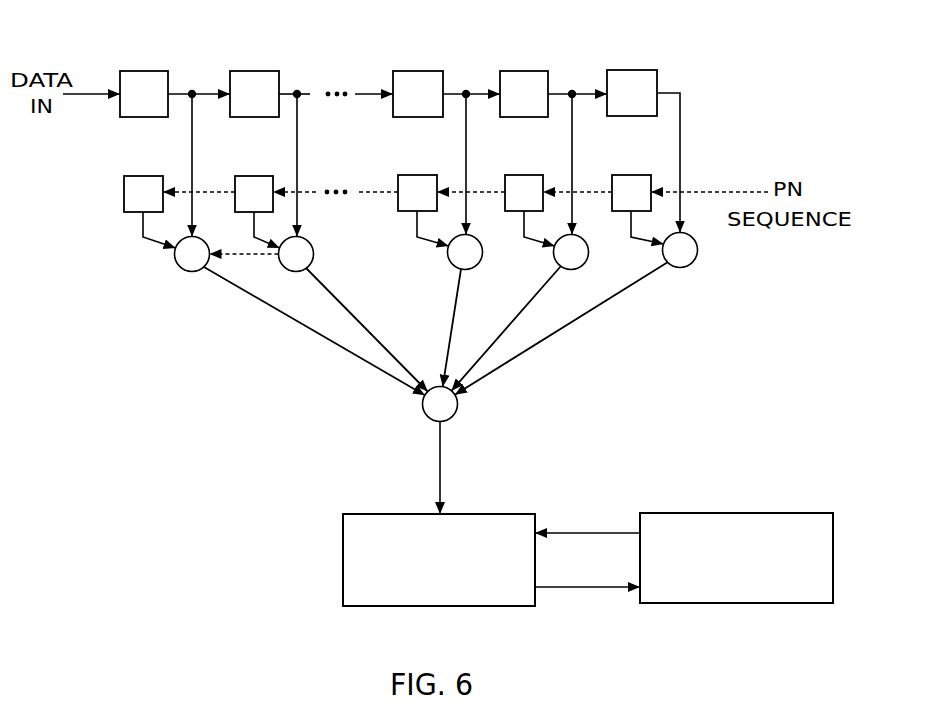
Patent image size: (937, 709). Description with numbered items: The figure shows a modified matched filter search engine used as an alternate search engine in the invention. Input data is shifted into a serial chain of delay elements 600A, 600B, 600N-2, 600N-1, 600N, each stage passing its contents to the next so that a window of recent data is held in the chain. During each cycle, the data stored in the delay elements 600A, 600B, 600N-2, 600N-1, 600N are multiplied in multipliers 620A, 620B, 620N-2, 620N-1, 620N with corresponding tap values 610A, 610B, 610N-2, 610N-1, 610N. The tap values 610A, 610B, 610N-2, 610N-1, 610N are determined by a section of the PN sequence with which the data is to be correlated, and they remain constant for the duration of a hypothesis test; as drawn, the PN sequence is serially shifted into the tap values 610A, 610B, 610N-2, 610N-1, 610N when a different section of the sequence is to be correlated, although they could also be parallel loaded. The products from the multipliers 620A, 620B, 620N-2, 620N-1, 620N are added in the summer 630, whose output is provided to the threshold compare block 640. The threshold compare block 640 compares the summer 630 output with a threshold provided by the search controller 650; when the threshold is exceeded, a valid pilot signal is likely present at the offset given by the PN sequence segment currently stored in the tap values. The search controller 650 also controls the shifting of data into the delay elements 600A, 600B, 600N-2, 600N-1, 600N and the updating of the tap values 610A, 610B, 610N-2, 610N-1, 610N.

The delay element 600A is at (148, 71).
The delay element 600B is at (258, 71).
The delay element 600N-2 is at (423, 70).
The delay element 600N-1 is at (530, 70).
The delay element 600N is at (637, 70).
The tap value 610A is at (146, 176).
The tap value 610B is at (257, 176).
The tap value 610N-2 is at (422, 175).
The tap value 610N-1 is at (528, 175).
The tap value 610N is at (636, 175).
The multiplier 620A is at (188, 270).
The multiplier 620B is at (309, 242).
The multiplier 620N-2 is at (453, 265).
The multiplier 620N-1 is at (558, 265).
The multiplier 620N is at (692, 262).
The summer 630 is at (428, 416).
The threshold compare block 640 is at (510, 514).
The search controller 650 is at (793, 513).